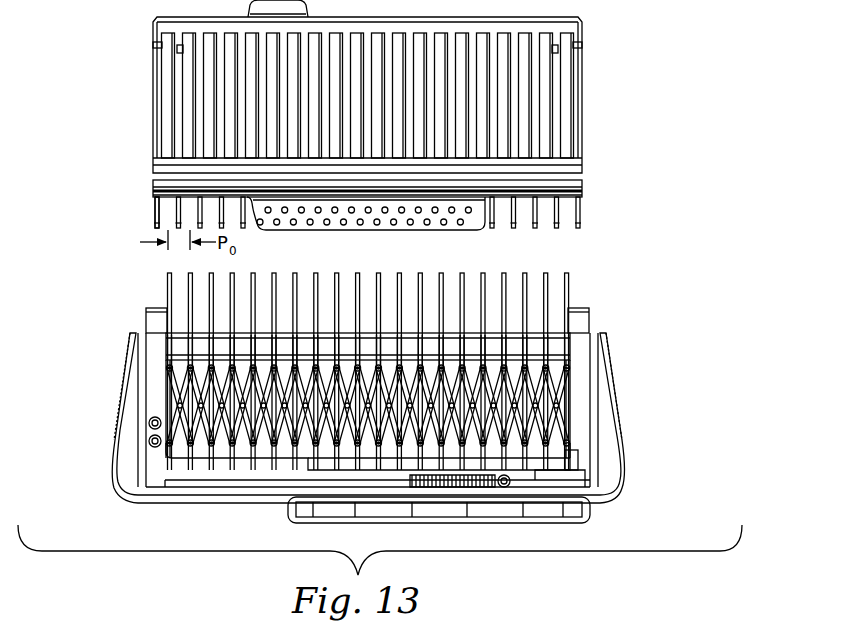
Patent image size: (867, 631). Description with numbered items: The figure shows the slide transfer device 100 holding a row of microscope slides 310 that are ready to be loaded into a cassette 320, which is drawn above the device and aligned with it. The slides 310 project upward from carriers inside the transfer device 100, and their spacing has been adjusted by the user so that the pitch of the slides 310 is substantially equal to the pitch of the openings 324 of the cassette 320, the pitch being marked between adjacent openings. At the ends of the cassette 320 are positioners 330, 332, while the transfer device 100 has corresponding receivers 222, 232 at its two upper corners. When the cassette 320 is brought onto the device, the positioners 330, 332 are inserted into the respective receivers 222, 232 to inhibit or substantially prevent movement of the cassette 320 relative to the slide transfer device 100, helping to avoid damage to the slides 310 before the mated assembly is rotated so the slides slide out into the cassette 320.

The slide transfer device 100 is at (384, 397).
The receiver 222 is at (146, 321).
The receiver 232 is at (590, 312).
The microscope slide 310 is at (580, 290).
The cassette 320 is at (592, 96).
The openings of the cassette 324 is at (197, 210).
The positioner 330 is at (156, 221).
The positioner 332 is at (584, 213).